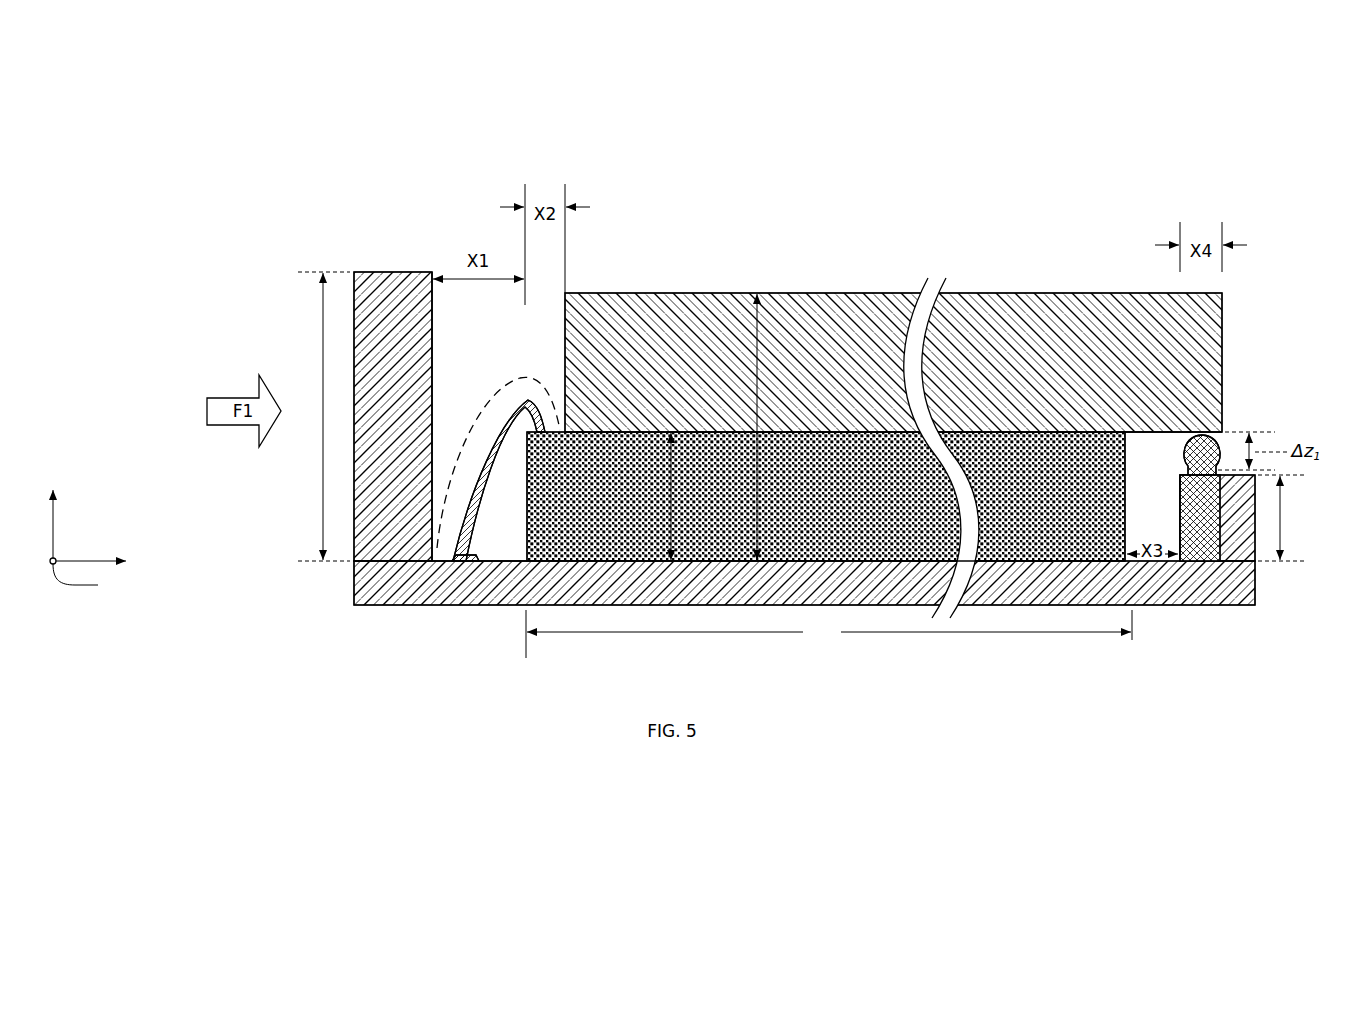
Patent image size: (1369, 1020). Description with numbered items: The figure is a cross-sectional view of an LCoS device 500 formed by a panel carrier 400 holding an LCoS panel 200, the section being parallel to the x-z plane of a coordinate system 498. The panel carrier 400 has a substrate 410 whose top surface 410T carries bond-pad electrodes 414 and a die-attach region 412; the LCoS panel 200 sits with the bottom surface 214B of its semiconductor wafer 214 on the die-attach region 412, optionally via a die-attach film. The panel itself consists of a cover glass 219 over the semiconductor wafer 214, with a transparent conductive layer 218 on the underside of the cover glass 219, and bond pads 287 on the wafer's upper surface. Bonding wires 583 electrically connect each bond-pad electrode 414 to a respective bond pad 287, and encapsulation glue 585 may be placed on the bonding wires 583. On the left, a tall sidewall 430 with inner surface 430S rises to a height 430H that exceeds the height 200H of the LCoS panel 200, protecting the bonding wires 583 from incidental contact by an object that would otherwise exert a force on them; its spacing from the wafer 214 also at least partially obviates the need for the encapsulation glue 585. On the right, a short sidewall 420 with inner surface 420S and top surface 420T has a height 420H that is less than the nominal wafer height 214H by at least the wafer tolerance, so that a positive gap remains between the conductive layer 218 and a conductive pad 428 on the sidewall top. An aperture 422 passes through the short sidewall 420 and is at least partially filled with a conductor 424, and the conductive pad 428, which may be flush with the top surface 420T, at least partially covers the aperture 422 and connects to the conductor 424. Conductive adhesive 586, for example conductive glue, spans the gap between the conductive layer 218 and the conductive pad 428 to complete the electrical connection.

The LCoS device 500 is at (226, 170).
The LCoS panel 200 is at (1245, 279).
The panel carrier 400 is at (318, 618).
The coordinate system 498 is at (99, 502).
The tall sidewall 430 is at (393, 416).
The inner surface 430S is at (434, 333).
The height 430H is at (324, 416).
The encapsulation glue 585 is at (488, 392).
The bonding wires 583 is at (482, 491).
The bond pads 287 is at (541, 437).
The top surface 410T is at (496, 558).
The bond-pad electrodes 414 is at (462, 562).
The cover glass 219 is at (893, 362).
The semiconductor wafer 214 is at (826, 496).
The substrate 410 is at (804, 583).
The bottom surface 214B is at (1043, 565).
The die-attach region 412 is at (829, 634).
The height 200H is at (763, 427).
The nominal height 214H is at (676, 496).
The transparent conductive layer 218 is at (1190, 430).
The top surface 420T is at (1237, 468).
The conductive adhesive 586 is at (1202, 455).
The conductive pad 428 is at (1186, 475).
The aperture 422 is at (1186, 489).
The inner surface 420S is at (1178, 531).
The conductor 424 is at (1200, 518).
The short sidewall 420 is at (1217, 518).
The height 420H is at (1285, 518).